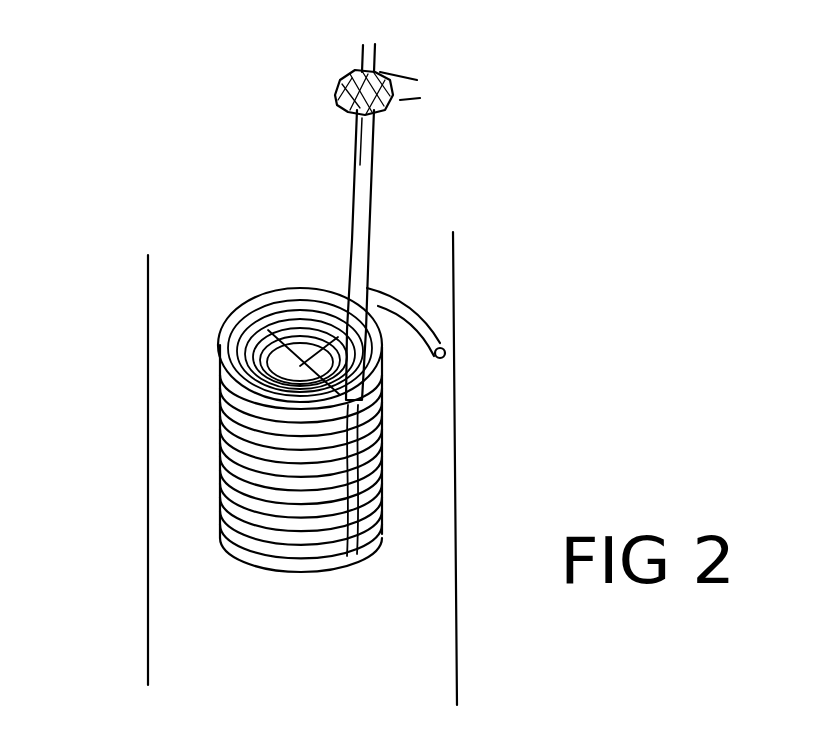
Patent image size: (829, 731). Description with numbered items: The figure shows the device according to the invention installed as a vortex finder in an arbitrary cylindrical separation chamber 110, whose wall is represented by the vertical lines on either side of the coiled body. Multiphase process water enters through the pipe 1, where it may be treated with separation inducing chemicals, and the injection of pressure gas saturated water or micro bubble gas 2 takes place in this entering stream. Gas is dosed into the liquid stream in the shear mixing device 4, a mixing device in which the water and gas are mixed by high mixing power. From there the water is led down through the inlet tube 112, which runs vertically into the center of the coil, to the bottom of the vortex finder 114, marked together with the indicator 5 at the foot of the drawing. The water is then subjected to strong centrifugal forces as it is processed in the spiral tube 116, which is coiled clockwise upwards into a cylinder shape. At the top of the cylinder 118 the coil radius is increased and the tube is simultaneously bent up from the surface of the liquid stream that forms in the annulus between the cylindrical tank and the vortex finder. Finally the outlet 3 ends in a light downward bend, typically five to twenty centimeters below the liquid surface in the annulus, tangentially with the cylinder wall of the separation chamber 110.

The pipe 1 is at (368, 0).
The injection of pressure gas saturated water/micro bubble gas 2 is at (510, 108).
The outlet 3 is at (562, 303).
The shear mixing device 4 is at (337, 107).
The vortex finder 5 is at (342, 627).
The cylindrical separation chamber 110 is at (457, 492).
The inlet tube 112 is at (366, 240).
The vortex finder 114 is at (334, 560).
The spiral tube 116 is at (220, 478).
The top of the cylinder 118 is at (303, 290).